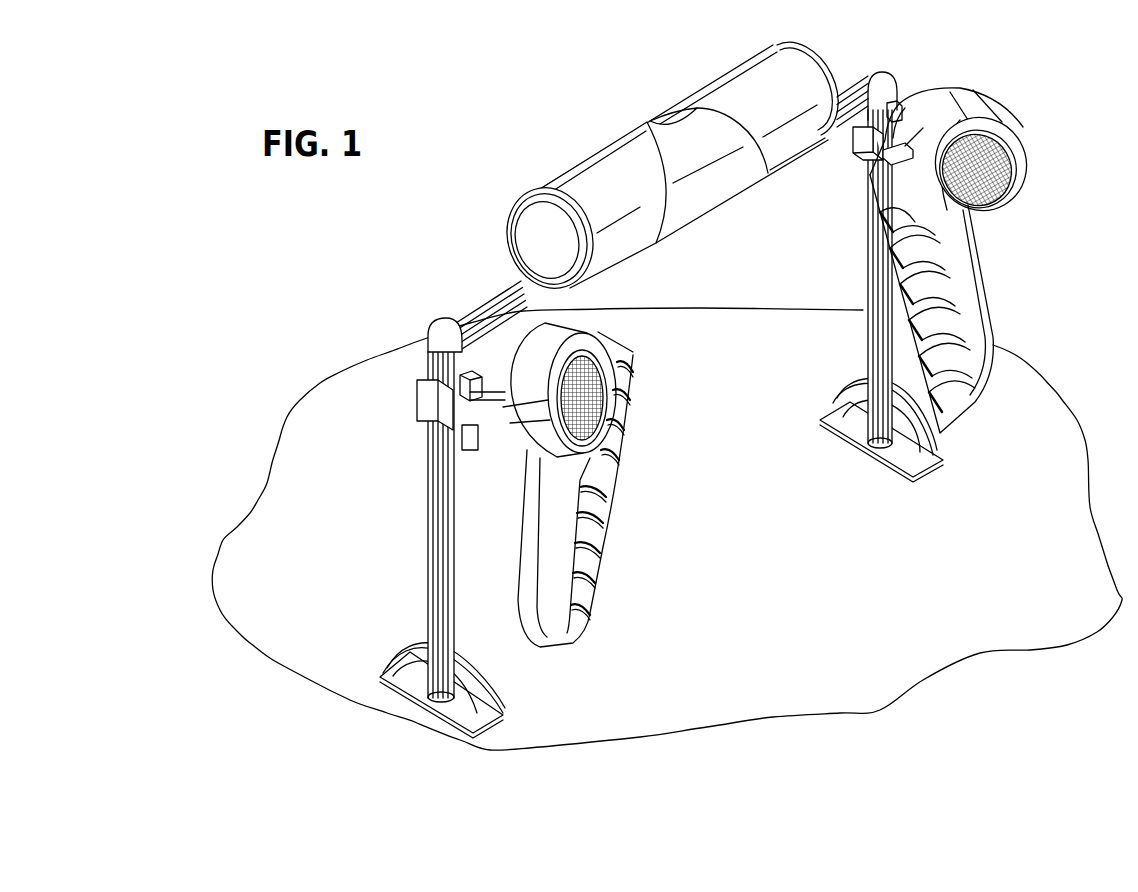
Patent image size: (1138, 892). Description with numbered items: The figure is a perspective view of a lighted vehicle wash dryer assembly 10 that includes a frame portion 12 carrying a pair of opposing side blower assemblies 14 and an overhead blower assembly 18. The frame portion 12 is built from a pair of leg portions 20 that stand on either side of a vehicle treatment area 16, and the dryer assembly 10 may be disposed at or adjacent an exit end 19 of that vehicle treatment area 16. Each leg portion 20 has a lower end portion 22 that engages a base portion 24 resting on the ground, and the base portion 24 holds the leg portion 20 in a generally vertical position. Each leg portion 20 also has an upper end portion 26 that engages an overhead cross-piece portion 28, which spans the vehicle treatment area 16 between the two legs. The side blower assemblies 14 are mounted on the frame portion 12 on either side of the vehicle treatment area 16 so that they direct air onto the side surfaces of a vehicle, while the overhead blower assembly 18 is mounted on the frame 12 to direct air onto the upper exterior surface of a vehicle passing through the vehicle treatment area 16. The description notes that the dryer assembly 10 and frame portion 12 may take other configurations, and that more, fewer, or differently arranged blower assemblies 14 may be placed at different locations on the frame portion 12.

The dryer assembly 10 is at (638, 78).
The frame portion 12 is at (862, 56).
The side blower assembly 14 is at (636, 486).
The vehicle treatment area 16 is at (805, 568).
The overhead blower assembly 18 is at (600, 158).
The exit end 19 is at (1046, 555).
The leg portion 20 is at (430, 545).
The lower end portion 22 is at (872, 435).
The base portion 24 is at (492, 728).
The upper end portion 26 is at (432, 372).
The overhead cross-piece portion 28 is at (490, 300).